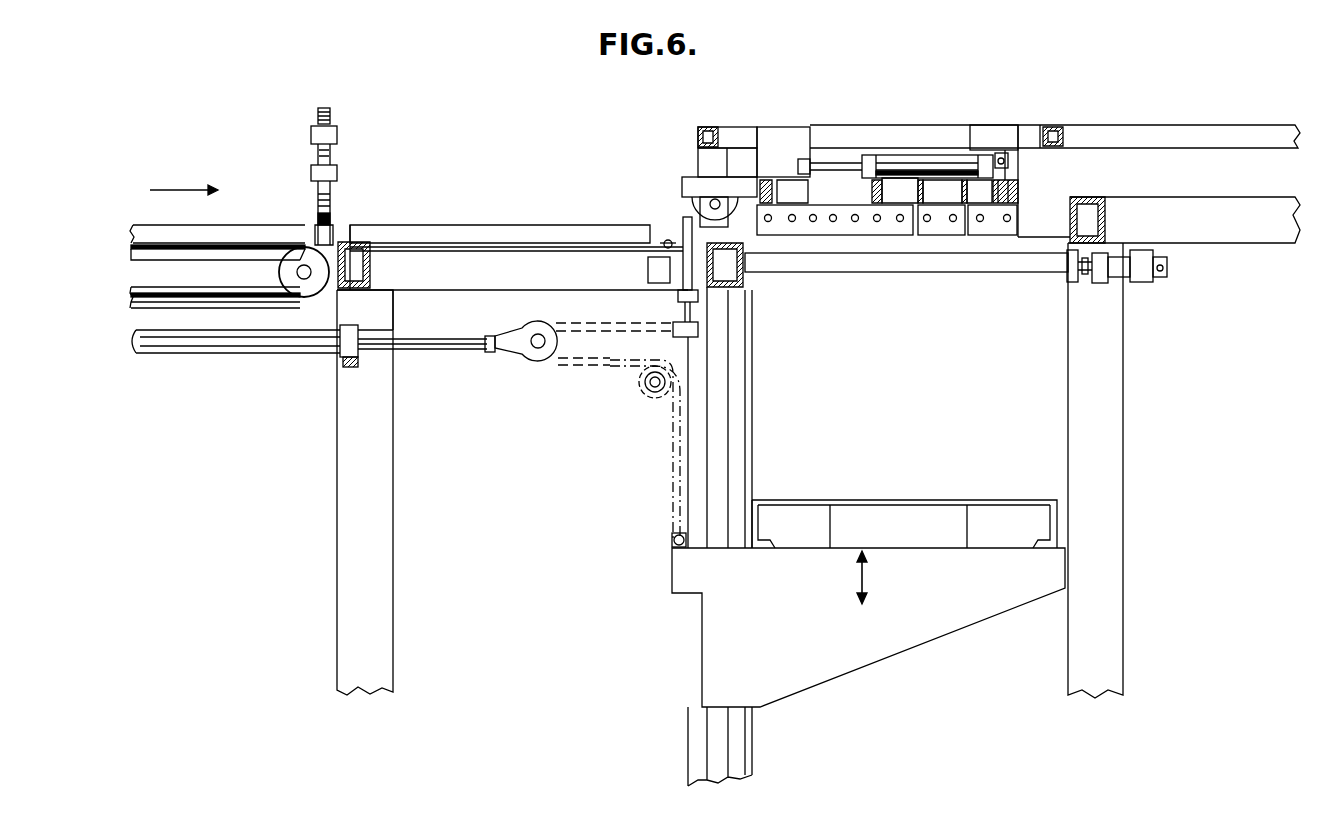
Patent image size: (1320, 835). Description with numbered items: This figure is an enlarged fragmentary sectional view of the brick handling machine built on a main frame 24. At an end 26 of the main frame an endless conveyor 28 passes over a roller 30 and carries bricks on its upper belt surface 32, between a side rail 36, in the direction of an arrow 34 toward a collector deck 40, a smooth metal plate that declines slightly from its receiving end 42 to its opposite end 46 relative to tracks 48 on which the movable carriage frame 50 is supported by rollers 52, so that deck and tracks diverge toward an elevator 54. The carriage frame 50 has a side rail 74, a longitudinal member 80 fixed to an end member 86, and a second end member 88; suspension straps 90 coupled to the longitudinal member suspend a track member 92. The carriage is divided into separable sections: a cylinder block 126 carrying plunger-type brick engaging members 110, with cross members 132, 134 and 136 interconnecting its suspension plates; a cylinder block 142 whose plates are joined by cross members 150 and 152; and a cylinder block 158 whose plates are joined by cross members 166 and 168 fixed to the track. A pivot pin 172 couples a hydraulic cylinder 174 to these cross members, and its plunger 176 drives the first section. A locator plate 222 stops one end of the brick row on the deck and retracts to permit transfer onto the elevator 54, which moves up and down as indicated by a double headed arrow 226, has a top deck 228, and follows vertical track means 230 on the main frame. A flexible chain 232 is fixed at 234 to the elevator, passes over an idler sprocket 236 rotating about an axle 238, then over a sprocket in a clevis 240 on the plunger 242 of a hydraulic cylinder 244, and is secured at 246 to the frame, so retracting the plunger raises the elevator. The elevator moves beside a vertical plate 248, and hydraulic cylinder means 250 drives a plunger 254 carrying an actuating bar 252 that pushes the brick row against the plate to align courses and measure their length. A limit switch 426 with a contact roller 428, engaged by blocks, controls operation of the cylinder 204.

The main frame 24 is at (500, 282).
The end of the main frame 26 is at (341, 290).
The endless conveyor 28 is at (263, 243).
The roller 30 is at (306, 287).
The upper belt surface 32 is at (215, 246).
The arrow 34 is at (178, 190).
The side rail 36 is at (283, 224).
The collector deck 40 is at (448, 245).
The receiving end 42 is at (347, 247).
The opposite end 46 is at (642, 230).
The tracks 48 is at (549, 234).
The movable carriage frame 50 is at (743, 138).
The rollers 52 is at (702, 222).
The elevator 54 is at (859, 500).
The side rail 74 is at (1210, 133).
The longitudinal member 80 is at (892, 157).
The end member 86 is at (712, 127).
The second end member 88 is at (1068, 131).
The suspension straps 90 is at (788, 138).
The track member 92 is at (690, 178).
The brick engaging members 110 is at (855, 221).
The cylinder block 126 is at (793, 236).
The cross member 132 is at (780, 222).
The cross member 134 is at (812, 162).
The cross member 136 is at (916, 157).
The cylinder block 142 is at (940, 236).
The cross member 150 is at (970, 200).
The cross member 152 is at (935, 200).
The cylinder block 158 is at (1000, 236).
The cross member 166 is at (1019, 188).
The cross member 168 is at (1020, 200).
The pivot pin 172 is at (1008, 158).
The hydraulic cylinder 174 is at (955, 234).
The plunger 176 is at (863, 190).
The cylinder 204 is at (332, 160).
The locator plate 222 is at (716, 252).
The double headed arrow 226 is at (860, 575).
The top deck 228 is at (912, 500).
The vertical track means 230 is at (698, 630).
The flexible chain 232 is at (675, 479).
The fixture 234 is at (672, 548).
The idler sprocket 236 is at (653, 400).
The axle 238 is at (651, 386).
The clevis 240 is at (538, 357).
The plunger 242 is at (424, 345).
The hydraulic cylinder 244 is at (327, 343).
The chain fixture 246 is at (675, 324).
The vertical plate 248 is at (752, 445).
The hydraulic cylinder means 250 is at (1133, 285).
The actuating bar 252 is at (1071, 283).
The plunger 254 is at (1096, 260).
The limit switch 426 is at (650, 264).
The contact roller 428 is at (666, 241).